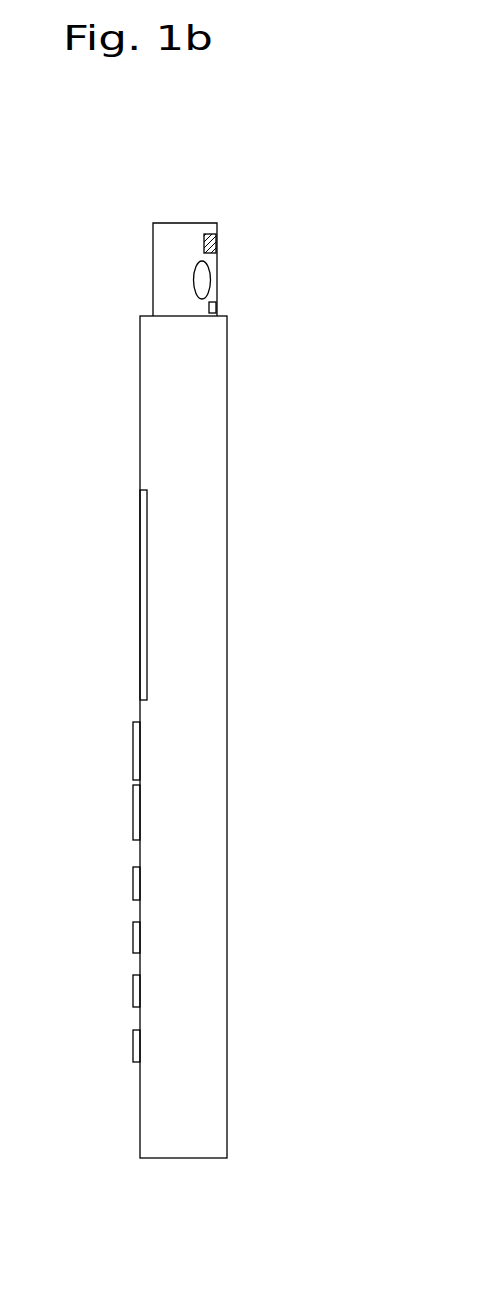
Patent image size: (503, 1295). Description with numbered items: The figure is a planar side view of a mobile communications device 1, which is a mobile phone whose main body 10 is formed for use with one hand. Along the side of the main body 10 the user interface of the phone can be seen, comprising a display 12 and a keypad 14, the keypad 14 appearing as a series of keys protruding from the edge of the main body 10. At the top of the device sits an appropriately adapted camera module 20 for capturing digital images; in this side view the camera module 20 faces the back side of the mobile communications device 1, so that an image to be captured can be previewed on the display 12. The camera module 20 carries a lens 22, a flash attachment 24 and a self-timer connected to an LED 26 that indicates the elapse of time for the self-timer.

The mobile communications device 1 is at (180, 163).
The main body 10 is at (228, 415).
The display 12 is at (140, 545).
The keypad 14 is at (135, 883).
The camera module 20 is at (153, 297).
The lens 22 is at (205, 281).
The flash attachment 24 is at (217, 245).
The LED 26 is at (215, 306).